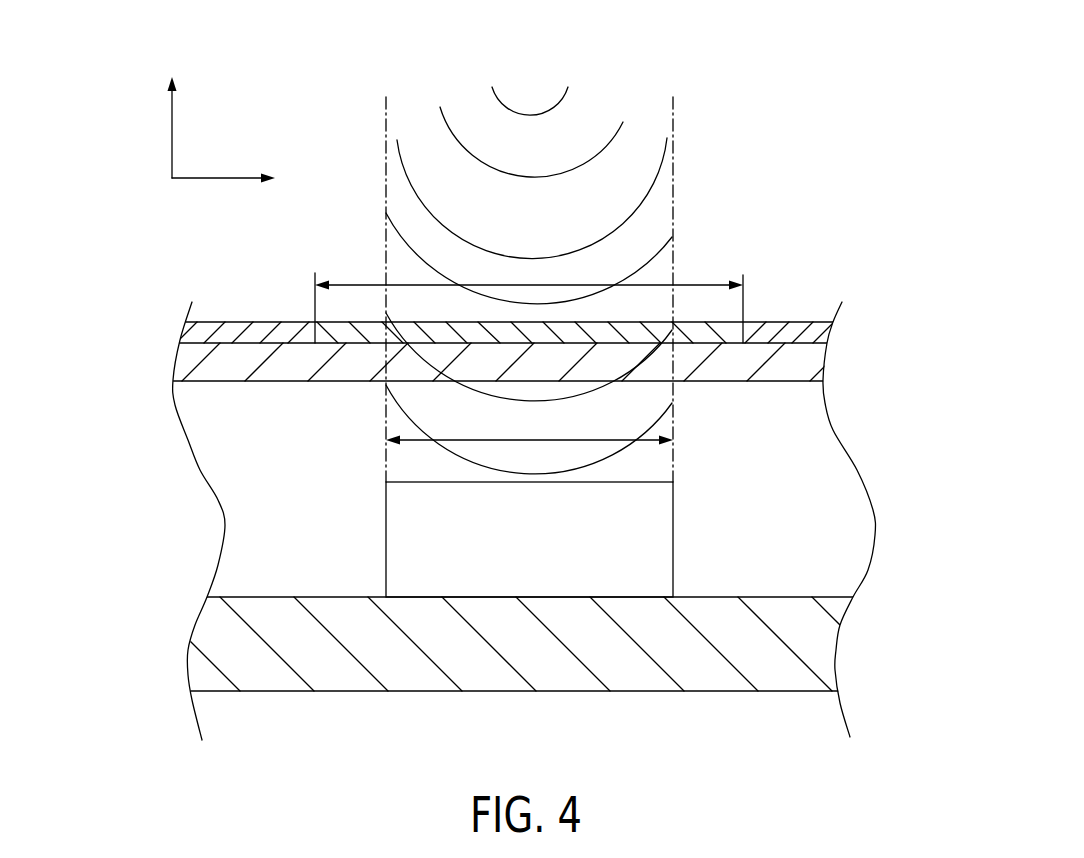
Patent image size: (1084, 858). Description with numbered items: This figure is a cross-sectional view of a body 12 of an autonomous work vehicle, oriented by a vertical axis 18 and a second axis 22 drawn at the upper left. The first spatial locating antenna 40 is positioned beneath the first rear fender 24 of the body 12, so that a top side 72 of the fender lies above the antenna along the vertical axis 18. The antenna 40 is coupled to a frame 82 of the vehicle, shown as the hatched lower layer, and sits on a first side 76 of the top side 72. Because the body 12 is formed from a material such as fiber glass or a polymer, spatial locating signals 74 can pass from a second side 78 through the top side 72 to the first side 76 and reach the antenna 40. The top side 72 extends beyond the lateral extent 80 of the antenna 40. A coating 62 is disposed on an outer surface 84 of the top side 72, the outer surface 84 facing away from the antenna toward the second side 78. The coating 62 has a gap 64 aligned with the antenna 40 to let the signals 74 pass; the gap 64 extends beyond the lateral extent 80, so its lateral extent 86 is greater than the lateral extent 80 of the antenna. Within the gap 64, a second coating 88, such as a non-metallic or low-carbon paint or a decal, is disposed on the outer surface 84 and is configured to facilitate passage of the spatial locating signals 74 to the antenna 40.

The body 12 is at (298, 273).
The vertical axis 18 is at (172, 130).
The horizontal axis 22 is at (215, 178).
The first rear fender 24 is at (323, 263).
The first spatial locating antenna 40 is at (673, 537).
The coating 62 is at (235, 332).
The gap 64 is at (650, 216).
The top side 72 is at (285, 375).
The spatial locating signals 74 is at (596, 155).
The first side 76 is at (805, 421).
The second side 78 is at (810, 278).
The lateral extent 80 is at (530, 440).
The frame 82 is at (341, 677).
The outer surface 84 is at (277, 320).
The lateral extent 86 is at (527, 284).
The second coating 88 is at (533, 325).